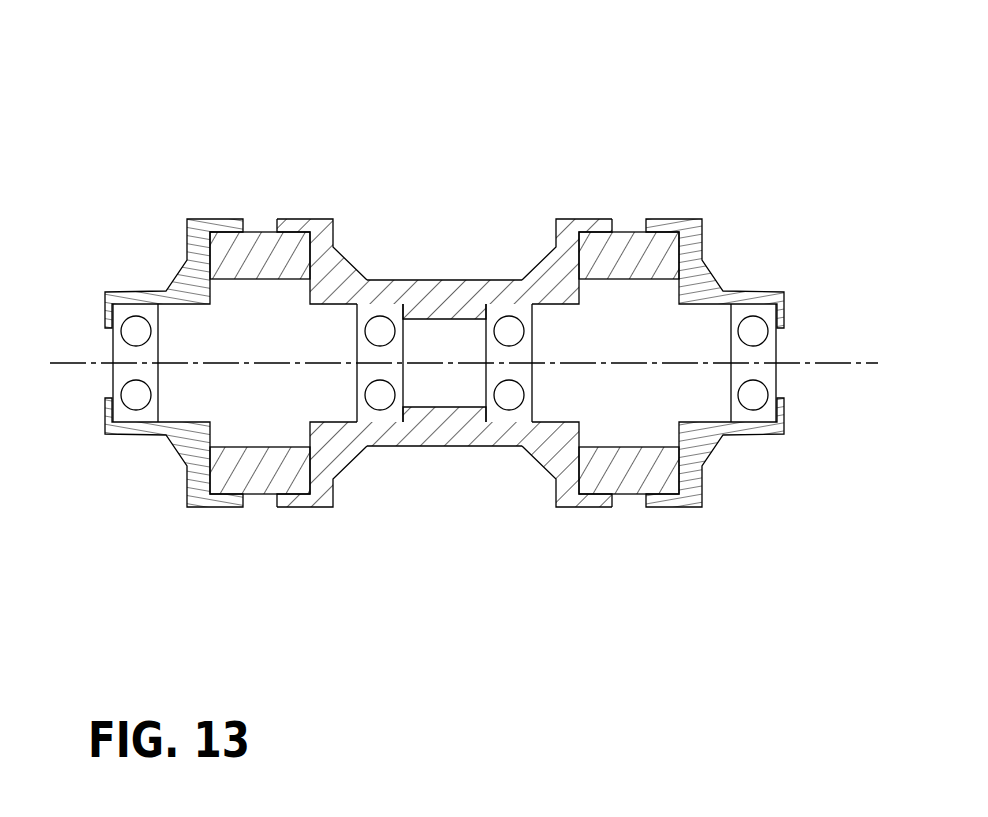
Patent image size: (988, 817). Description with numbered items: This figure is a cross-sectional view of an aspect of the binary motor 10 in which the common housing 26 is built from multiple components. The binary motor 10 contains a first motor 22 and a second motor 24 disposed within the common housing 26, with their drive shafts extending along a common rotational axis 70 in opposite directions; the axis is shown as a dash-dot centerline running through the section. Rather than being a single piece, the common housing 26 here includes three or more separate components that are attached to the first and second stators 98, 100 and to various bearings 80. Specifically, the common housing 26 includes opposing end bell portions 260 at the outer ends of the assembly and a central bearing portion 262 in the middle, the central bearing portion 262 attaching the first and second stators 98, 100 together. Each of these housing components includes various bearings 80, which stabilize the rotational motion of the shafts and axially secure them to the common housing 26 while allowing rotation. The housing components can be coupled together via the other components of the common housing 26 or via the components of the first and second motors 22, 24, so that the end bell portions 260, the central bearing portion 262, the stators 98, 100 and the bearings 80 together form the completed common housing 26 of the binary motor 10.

The binary motor 10 is at (579, 137).
The first motor 22 is at (254, 522).
The second motor 24 is at (665, 524).
The common housing 26 is at (391, 495).
The common rotational axis 70 is at (800, 362).
The bearings 80 is at (509, 397).
The first stator 98 is at (264, 242).
The second stator 100 is at (630, 243).
The end bell portions 260 is at (187, 283).
The central bearing portion 262 is at (445, 303).